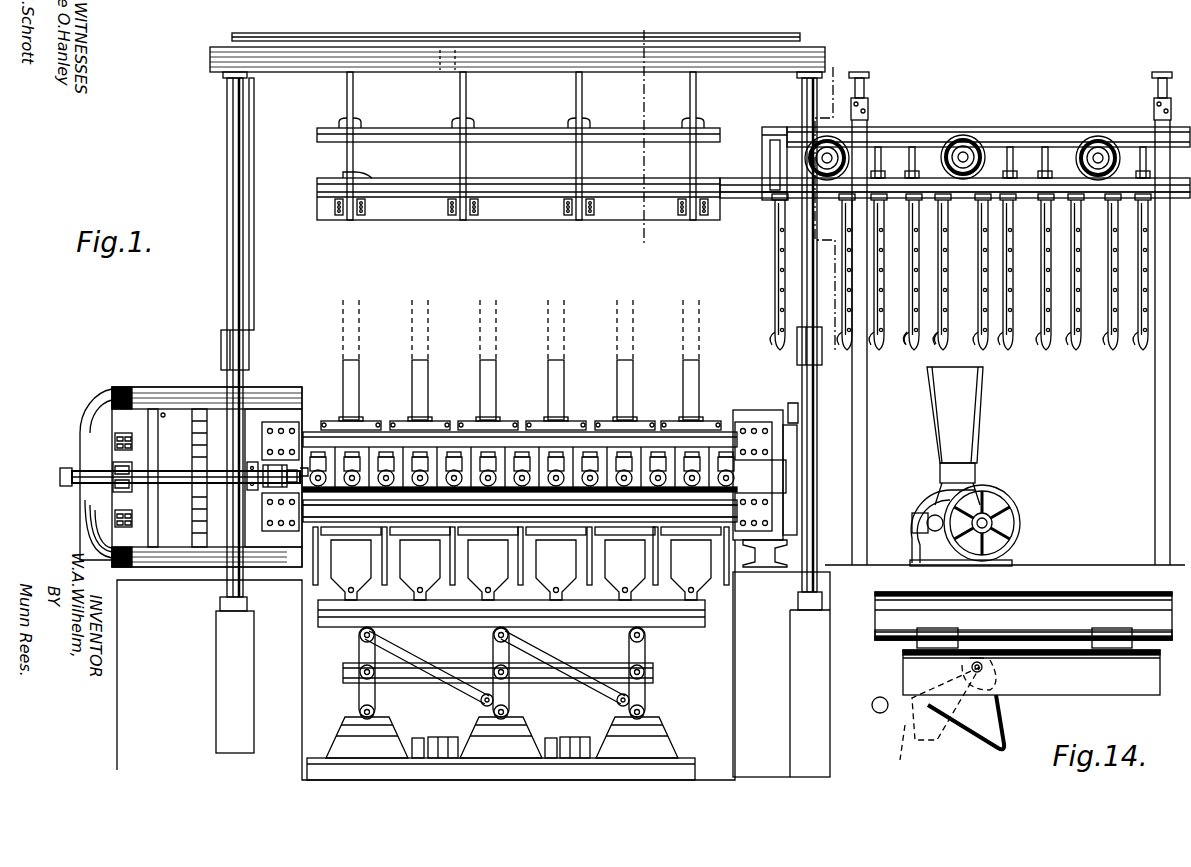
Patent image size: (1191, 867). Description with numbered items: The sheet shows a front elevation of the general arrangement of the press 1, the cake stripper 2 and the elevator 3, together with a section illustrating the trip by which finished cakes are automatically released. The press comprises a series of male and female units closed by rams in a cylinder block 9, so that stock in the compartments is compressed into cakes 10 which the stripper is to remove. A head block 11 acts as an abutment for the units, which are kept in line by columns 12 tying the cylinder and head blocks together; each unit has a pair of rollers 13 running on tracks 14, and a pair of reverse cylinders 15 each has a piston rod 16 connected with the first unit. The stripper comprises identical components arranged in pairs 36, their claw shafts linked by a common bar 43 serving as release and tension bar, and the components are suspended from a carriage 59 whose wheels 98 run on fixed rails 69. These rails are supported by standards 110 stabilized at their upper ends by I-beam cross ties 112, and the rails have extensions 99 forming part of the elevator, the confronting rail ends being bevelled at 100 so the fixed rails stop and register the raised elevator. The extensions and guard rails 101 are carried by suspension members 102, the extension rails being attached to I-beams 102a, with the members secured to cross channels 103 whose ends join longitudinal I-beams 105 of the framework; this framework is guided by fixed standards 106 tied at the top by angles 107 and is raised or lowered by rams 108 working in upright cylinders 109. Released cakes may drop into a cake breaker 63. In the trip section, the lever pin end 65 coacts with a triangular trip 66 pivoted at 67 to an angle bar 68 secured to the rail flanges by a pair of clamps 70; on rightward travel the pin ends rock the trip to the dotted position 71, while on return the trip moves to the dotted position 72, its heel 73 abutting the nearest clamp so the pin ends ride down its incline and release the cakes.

In FIG. 1, the press 1 is at (520, 393).
In FIG. 1, the cake stripper 2 is at (960, 272).
In FIG. 1, the elevator 3 is at (521, 148).
In FIG. 1, the cylinder block 9 is at (253, 412).
In FIG. 1, the cakes 10 is at (656, 233).
In FIG. 1, the head block 11 is at (747, 420).
In FIG. 1, the columns 12 is at (443, 442).
In FIG. 1, the rollers 13 is at (458, 488).
In FIG. 1, the tracks 14 is at (510, 490).
In FIG. 1, the reverse cylinders 15 is at (76, 482).
In FIG. 1, the piston rod 16 is at (288, 478).
In FIG. 1, the pairs of components 36 is at (932, 338).
In FIG. 1, the bar 43 is at (908, 282).
In FIG. 1, the carriage 59 is at (1035, 133).
In FIG. 1, the cake breaker 63 is at (975, 412).
In FIG. 14, the pin end 65 is at (877, 698).
In FIG. 14, the triangular trip 66 is at (937, 741).
In FIG. 14, the pivot 67 is at (979, 660).
In FIG. 14, the angle bar 68 is at (1088, 686).
In FIG. 14, the rails 69 is at (1100, 606).
In FIG. 14, the clamps 70 is at (932, 636).
In FIG. 14, the dotted line position 71 is at (1050, 638).
In FIG. 14, the dotted line position 72 is at (898, 760).
In FIG. 14, the heel 73 is at (903, 652).
In FIG. 1, the wheels 98 is at (845, 146).
In FIG. 1, the extensions 99 is at (660, 190).
In FIG. 1, the bevelled ends 100 is at (737, 180).
In FIG. 1, the guard rails 101 is at (598, 128).
In FIG. 1, the suspension members 102 is at (354, 95).
In FIG. 1, the I-beams 102a is at (513, 206).
In FIG. 1, the cross channels 103 is at (447, 62).
In FIG. 1, the longitudinal I-beams 105 is at (745, 62).
In FIG. 1, the fixed standards 106 is at (787, 110).
In FIG. 1, the angles 107 is at (560, 40).
In FIG. 1, the rams 108 is at (232, 138).
In FIG. 1, the upright cylinders 109 is at (232, 586).
In FIG. 1, the standards 110 is at (864, 388).
In FIG. 1, the cross ties 112 is at (868, 80).